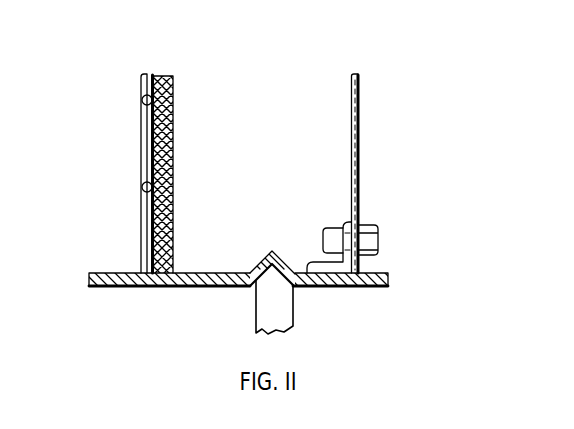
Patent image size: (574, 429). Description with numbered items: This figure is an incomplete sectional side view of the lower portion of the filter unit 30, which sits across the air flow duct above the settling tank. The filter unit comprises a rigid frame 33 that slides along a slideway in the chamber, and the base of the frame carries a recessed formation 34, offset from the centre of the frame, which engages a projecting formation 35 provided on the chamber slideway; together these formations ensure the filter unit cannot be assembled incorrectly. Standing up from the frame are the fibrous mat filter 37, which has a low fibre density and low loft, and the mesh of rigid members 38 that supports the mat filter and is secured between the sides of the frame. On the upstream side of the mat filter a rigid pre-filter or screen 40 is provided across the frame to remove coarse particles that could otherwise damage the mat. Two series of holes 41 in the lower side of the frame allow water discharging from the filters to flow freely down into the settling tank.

The filter unit 30 is at (154, 292).
The rigid frame 33 is at (222, 288).
The recessed formation 34 is at (272, 250).
The projecting formation 35 is at (280, 295).
The fibrous mat filter 37 is at (168, 78).
The mesh of rigid members 38 is at (148, 162).
The pre-filter 40 is at (351, 100).
The holes 41 is at (188, 280).